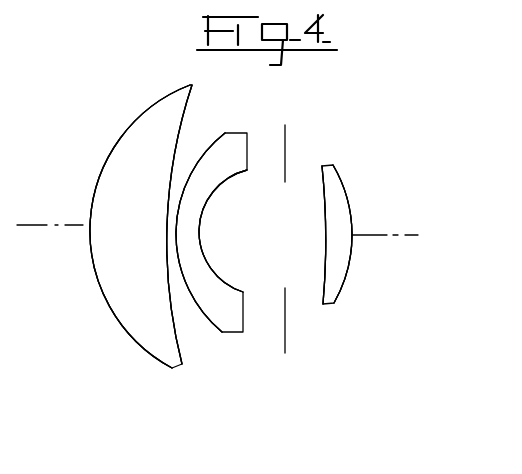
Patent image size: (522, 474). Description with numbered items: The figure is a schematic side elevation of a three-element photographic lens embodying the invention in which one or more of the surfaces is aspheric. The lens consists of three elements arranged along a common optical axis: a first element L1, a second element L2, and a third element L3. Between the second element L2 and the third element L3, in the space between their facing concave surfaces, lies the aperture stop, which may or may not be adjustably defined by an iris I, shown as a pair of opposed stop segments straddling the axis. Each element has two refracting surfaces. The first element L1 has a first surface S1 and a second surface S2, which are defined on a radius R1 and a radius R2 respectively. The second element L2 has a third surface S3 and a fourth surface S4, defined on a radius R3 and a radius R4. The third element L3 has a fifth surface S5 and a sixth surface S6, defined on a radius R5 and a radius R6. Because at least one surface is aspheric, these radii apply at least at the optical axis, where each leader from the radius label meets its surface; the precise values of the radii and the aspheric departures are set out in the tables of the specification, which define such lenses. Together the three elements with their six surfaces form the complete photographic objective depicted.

The first lens element L1 is at (157, 122).
The second lens element L2 is at (233, 142).
The third lens element L3 is at (333, 178).
The iris I is at (288, 130).
The radius of first surface R1 is at (85, 225).
The radius of second surface R2 is at (173, 232).
The radius of third surface R3 is at (173, 232).
The radius of fourth surface R4 is at (198, 236).
The radius of fifth surface R5 is at (325, 238).
The radius of sixth surface R6 is at (352, 233).
The first surface S1 is at (112, 302).
The second surface S2 is at (180, 350).
The third surface S3 is at (200, 305).
The fourth surface S4 is at (222, 280).
The fifth surface S5 is at (323, 268).
The sixth surface S6 is at (350, 268).